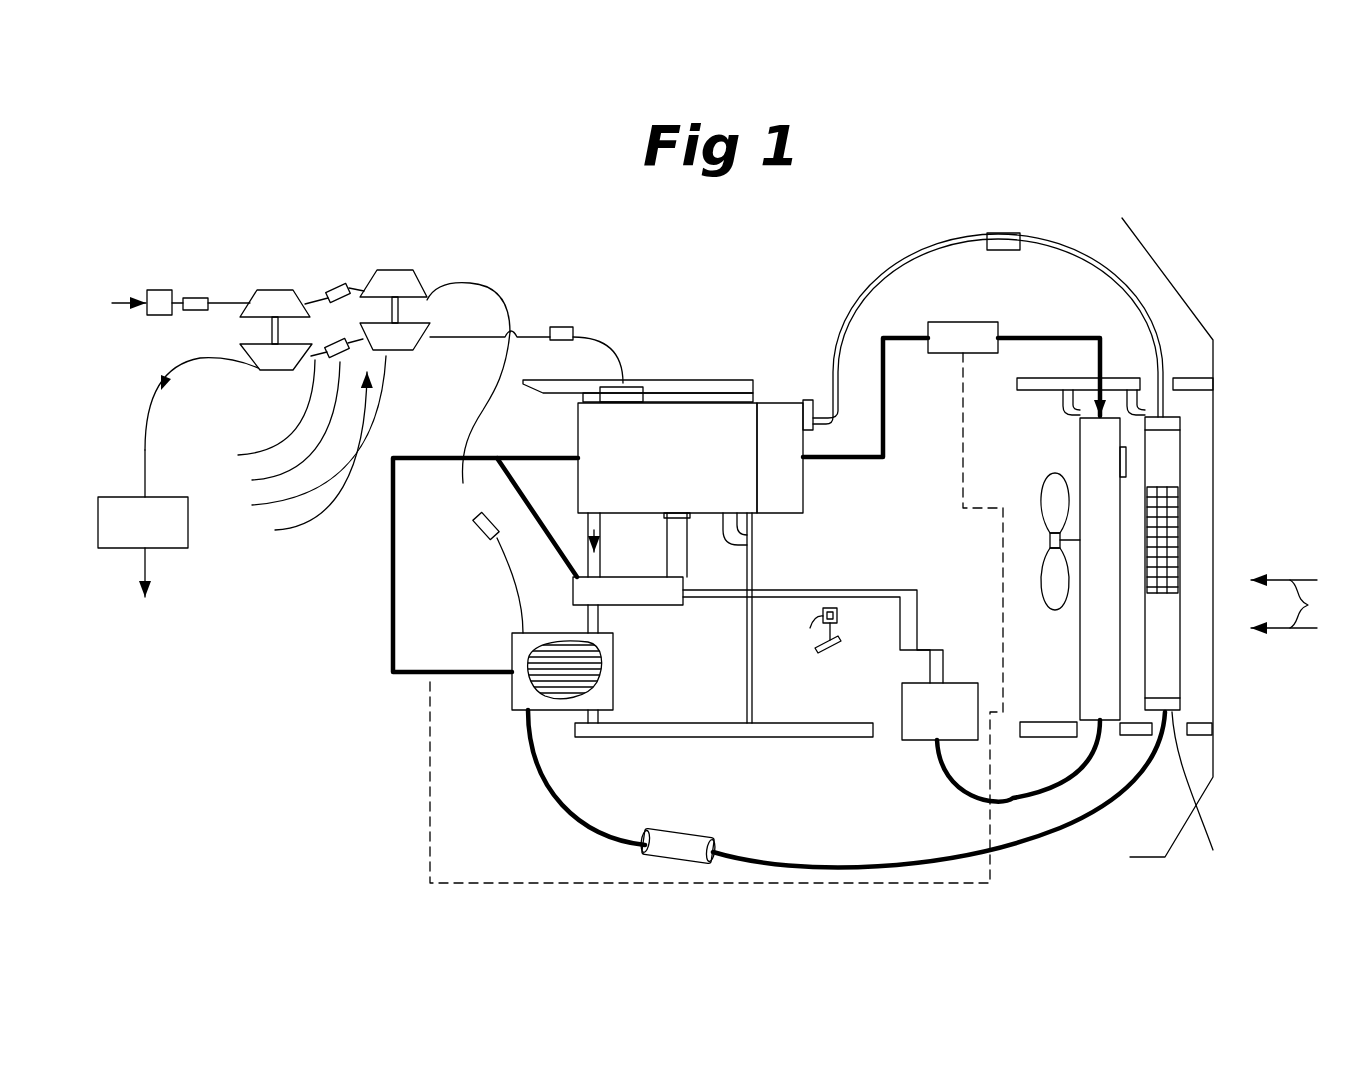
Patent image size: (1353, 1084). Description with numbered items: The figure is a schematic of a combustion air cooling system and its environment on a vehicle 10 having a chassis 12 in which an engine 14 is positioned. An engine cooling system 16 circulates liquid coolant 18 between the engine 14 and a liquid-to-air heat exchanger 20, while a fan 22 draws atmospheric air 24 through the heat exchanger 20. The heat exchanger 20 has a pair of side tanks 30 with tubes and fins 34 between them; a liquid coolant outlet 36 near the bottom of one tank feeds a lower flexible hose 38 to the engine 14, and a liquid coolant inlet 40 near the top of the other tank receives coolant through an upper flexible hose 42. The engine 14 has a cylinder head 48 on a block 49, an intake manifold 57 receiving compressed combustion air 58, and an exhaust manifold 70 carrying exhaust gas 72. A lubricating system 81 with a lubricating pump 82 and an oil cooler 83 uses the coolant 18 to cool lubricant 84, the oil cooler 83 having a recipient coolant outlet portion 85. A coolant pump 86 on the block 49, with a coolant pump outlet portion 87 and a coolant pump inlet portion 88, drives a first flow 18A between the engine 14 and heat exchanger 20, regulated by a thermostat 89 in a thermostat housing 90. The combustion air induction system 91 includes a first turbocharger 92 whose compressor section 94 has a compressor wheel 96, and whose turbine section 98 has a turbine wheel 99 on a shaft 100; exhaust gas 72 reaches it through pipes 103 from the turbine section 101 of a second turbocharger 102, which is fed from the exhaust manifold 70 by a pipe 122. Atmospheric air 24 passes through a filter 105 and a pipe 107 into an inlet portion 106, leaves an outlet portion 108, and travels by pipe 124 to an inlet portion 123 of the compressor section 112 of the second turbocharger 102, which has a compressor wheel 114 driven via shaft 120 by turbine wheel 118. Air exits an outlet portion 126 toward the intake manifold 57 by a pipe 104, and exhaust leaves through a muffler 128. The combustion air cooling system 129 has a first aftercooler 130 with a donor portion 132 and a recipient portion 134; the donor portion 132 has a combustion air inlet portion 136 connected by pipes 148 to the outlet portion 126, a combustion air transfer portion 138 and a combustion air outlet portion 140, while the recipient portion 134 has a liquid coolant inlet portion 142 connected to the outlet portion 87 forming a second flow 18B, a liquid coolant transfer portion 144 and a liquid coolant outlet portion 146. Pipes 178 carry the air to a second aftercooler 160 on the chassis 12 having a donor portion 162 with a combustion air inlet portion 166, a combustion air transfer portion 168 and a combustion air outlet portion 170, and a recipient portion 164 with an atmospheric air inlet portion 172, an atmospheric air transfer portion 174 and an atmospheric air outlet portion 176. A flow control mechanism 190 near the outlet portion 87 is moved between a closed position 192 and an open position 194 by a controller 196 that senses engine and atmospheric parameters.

The vehicle 10 is at (1155, 262).
The chassis 12 is at (683, 472).
The engine 14 is at (720, 380).
The engine cooling system 16 is at (1029, 204).
The liquid coolant 18 is at (393, 662).
The first flow of coolant 18A is at (923, 612).
The second flow of coolant 18B is at (910, 675).
The heat exchanger 20 is at (1113, 572).
The fan 22 is at (1044, 488).
The atmospheric air 24 is at (1298, 604).
The side tanks 30 is at (1078, 435).
The tubes and fins 34 is at (1120, 465).
The liquid coolant outlet 36 is at (1073, 712).
The lower flexible hose 38 is at (1060, 738).
The liquid coolant inlet 40 is at (1105, 378).
The upper flexible hose 42 is at (1067, 337).
The cylinder head 48 is at (795, 471).
The block 49 is at (577, 442).
The intake manifold 57 is at (807, 400).
The compressed combustion air 58 is at (329, 292).
The exhaust manifold 70 is at (633, 383).
The exhaust gas 72 is at (610, 348).
The lubricating system 81 is at (698, 620).
The lubricating pump 82 is at (684, 525).
The oil cooler 83 is at (622, 607).
The lubricant 84 is at (603, 560).
The recipient coolant outlet portion 85 is at (518, 490).
The coolant pump 86 is at (910, 742).
The coolant pump outlet portion 87 is at (926, 642).
The coolant pump inlet portion 88 is at (980, 708).
The thermostat 89 is at (977, 320).
The thermostat housing 90 is at (928, 333).
The combustion air induction system 91 is at (533, 182).
The first turbocharger 92 is at (260, 283).
The compressor section 94 is at (283, 290).
The compressor wheel 96 is at (247, 303).
The turbine section 98 is at (265, 384).
The turbine wheel 99 is at (243, 372).
The shaft 100 is at (268, 332).
The turbine section 101 is at (297, 435).
The second turbocharger 102 is at (405, 352).
The pipes 103 is at (274, 426).
The pipe 104 is at (984, 233).
The filter 105 is at (158, 290).
The inlet portion 106 is at (253, 300).
The pipe 107 is at (188, 297).
The outlet portion 108 is at (311, 300).
The compressor section 112 is at (428, 295).
The compressor wheel 114 is at (418, 284).
The turbine wheel 118 is at (297, 457).
The shaft 120 is at (400, 308).
The pipe 122 is at (563, 327).
The inlet portion 123 is at (400, 250).
The pipe 124 is at (391, 252).
The outlet portion 126 is at (432, 300).
The muffler 128 is at (165, 532).
The combustion air cooling system 129 is at (380, 826).
The first aftercooler 130 is at (512, 690).
The donor portion 132 is at (560, 737).
The recipient portion 134 is at (533, 711).
The combustion air inlet portion 136 is at (522, 597).
The combustion air transfer portion 138 is at (598, 678).
The combustion air outlet portion 140 is at (528, 748).
The liquid coolant inlet portion 142 is at (613, 660).
The liquid coolant transfer portion 144 is at (524, 633).
The liquid coolant outlet portion 146 is at (510, 660).
The pipes 148 is at (478, 530).
The second aftercooler 160 is at (1183, 455).
The donor portion 162 is at (1252, 460).
The recipient portion 164 is at (1216, 787).
The combustion air inlet portion 166 is at (1168, 776).
The combustion air transfer portion 168 is at (1183, 514).
The combustion air outlet portion 170 is at (1165, 408).
The atmospheric air inlet portion 172 is at (1183, 686).
The atmospheric air transfer portion 174 is at (1167, 572).
The atmospheric air outlet portion 176 is at (1147, 681).
The pipes 178 is at (688, 833).
The flow control mechanism 190 is at (819, 618).
The closed position 192 is at (830, 656).
The open position 194 is at (838, 636).
The controller 196 is at (735, 524).